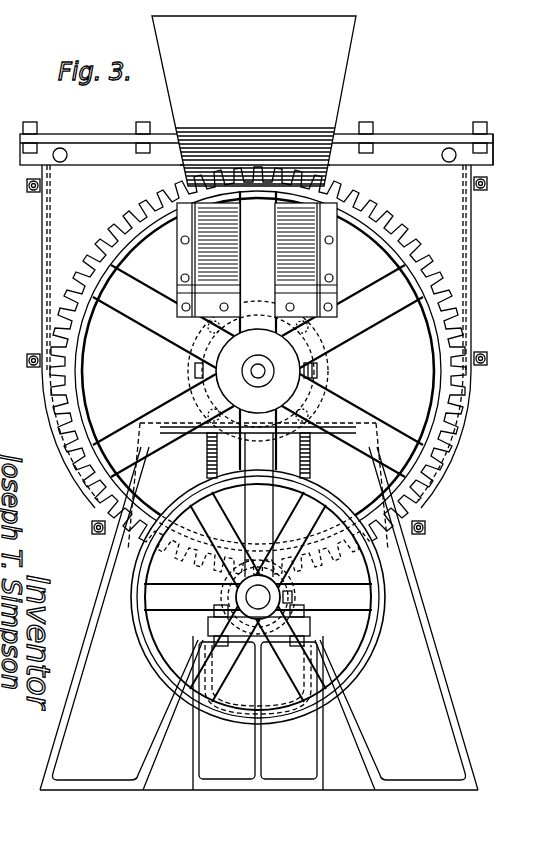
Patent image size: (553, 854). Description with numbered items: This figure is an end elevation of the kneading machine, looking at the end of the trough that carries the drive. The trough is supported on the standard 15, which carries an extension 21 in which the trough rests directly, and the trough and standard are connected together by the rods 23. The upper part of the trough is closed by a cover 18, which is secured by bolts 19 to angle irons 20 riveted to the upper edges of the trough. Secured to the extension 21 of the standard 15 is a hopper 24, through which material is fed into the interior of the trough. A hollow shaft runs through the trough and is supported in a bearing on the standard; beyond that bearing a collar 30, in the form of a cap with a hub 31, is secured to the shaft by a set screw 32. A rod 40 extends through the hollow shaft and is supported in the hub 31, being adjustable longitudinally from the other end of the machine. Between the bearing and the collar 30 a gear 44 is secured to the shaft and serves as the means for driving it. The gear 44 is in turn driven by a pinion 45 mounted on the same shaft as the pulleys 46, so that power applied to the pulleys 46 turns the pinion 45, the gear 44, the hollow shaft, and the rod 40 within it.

The standard 15 is at (432, 678).
The cover 18 is at (411, 134).
The bolts 19 is at (483, 124).
The angle irons 20 is at (494, 157).
The extension 21 is at (412, 350).
The rods 23 is at (32, 193).
The hopper 24 is at (255, 101).
The collar 30 is at (258, 568).
The hub 31 is at (240, 371).
The set screw 32 is at (318, 372).
The rod 40 is at (258, 365).
The gear 44 is at (440, 447).
The pinion 45 is at (259, 640).
The pulleys 46 is at (364, 659).